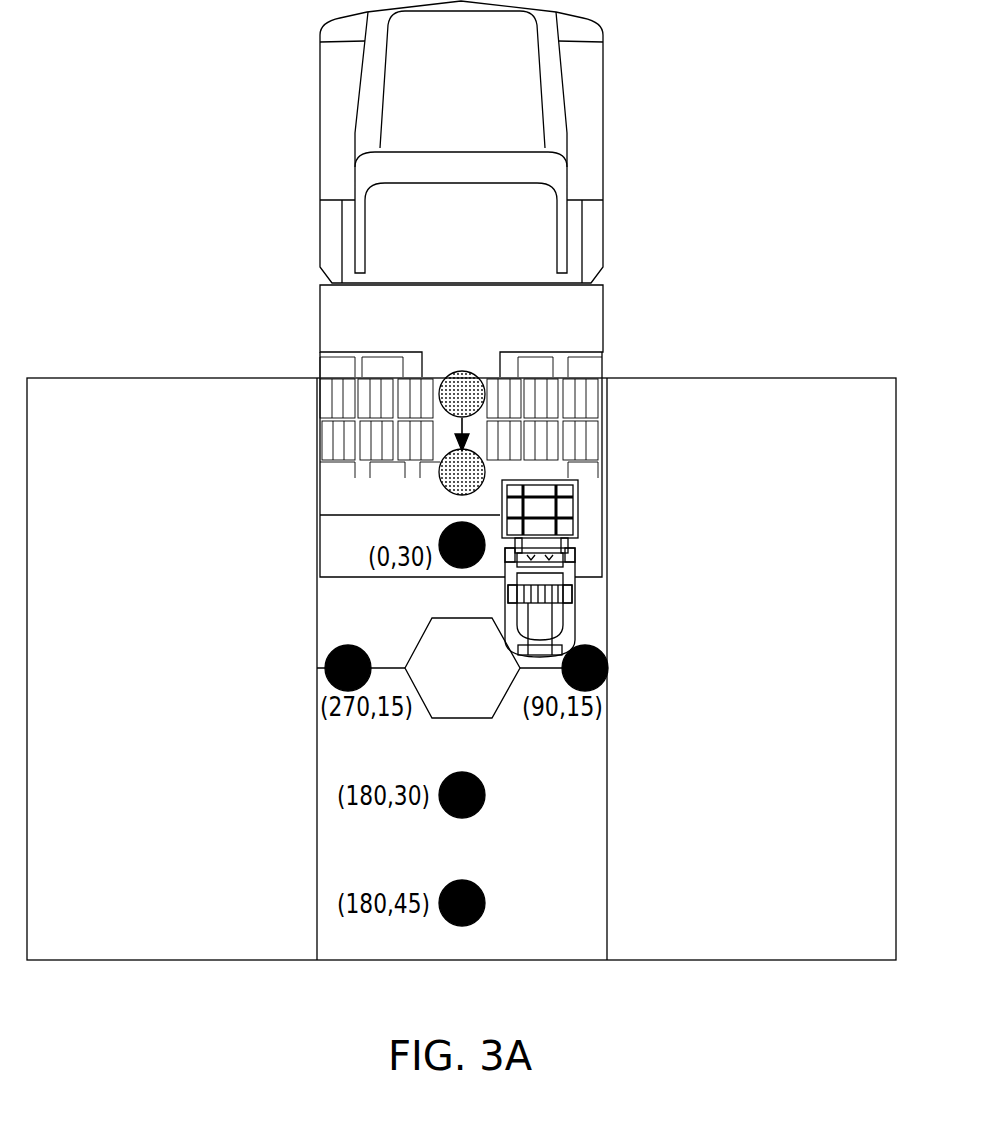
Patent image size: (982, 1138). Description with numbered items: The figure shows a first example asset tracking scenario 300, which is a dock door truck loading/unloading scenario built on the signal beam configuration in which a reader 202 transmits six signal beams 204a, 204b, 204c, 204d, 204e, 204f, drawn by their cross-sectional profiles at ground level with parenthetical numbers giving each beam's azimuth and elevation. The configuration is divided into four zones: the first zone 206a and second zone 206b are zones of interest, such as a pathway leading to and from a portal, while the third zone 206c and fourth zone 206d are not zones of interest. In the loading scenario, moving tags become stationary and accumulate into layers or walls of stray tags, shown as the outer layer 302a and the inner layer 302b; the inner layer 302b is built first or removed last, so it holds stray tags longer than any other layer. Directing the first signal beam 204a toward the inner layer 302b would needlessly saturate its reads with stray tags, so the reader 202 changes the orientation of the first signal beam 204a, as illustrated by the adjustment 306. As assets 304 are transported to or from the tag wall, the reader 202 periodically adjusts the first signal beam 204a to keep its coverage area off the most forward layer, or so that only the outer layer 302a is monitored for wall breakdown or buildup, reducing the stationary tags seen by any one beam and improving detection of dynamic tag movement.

The first example asset tracking scenario 300 is at (187, 39).
The outer layer 302a is at (400, 466).
The inner layer 302b is at (376, 378).
The first signal beam 204a is at (461, 369).
The second signal beam 204b is at (440, 532).
The third signal beam 204c is at (485, 796).
The fourth signal beam 204d is at (485, 904).
The fifth signal beam 204e is at (328, 652).
The sixth signal beam 204f is at (603, 650).
The adjustment 306 is at (482, 427).
The assets 304 is at (562, 512).
The reader 202 is at (418, 642).
The first zone 206a is at (438, 512).
The second zone 206b is at (493, 863).
The third zone 206c is at (203, 683).
The fourth zone 206d is at (783, 683).